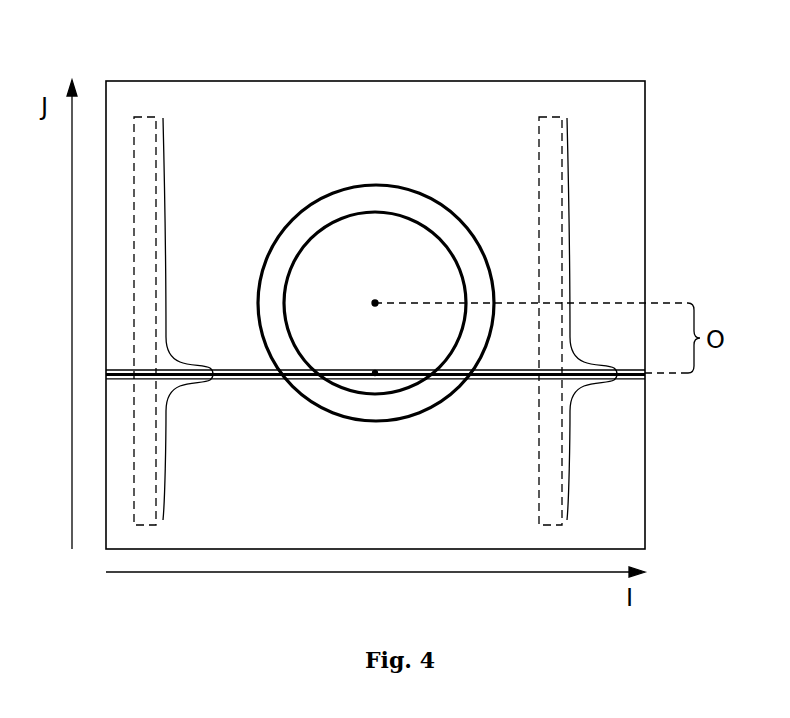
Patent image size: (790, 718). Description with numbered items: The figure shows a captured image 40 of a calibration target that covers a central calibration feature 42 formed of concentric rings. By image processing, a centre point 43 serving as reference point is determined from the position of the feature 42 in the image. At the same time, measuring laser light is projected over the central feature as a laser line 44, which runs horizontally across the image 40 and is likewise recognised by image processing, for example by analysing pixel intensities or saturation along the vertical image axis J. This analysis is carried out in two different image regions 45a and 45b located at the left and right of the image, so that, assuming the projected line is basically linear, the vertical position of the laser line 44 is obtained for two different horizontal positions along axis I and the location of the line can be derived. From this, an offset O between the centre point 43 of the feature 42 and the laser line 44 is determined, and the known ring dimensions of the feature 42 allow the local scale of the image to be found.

The captured image 40 is at (633, 132).
The central calibration feature 42 is at (341, 224).
The centre point 43 is at (530, 168).
The laser line 44 is at (392, 499).
The first image region 45a is at (129, 276).
The second image region 45b is at (542, 373).